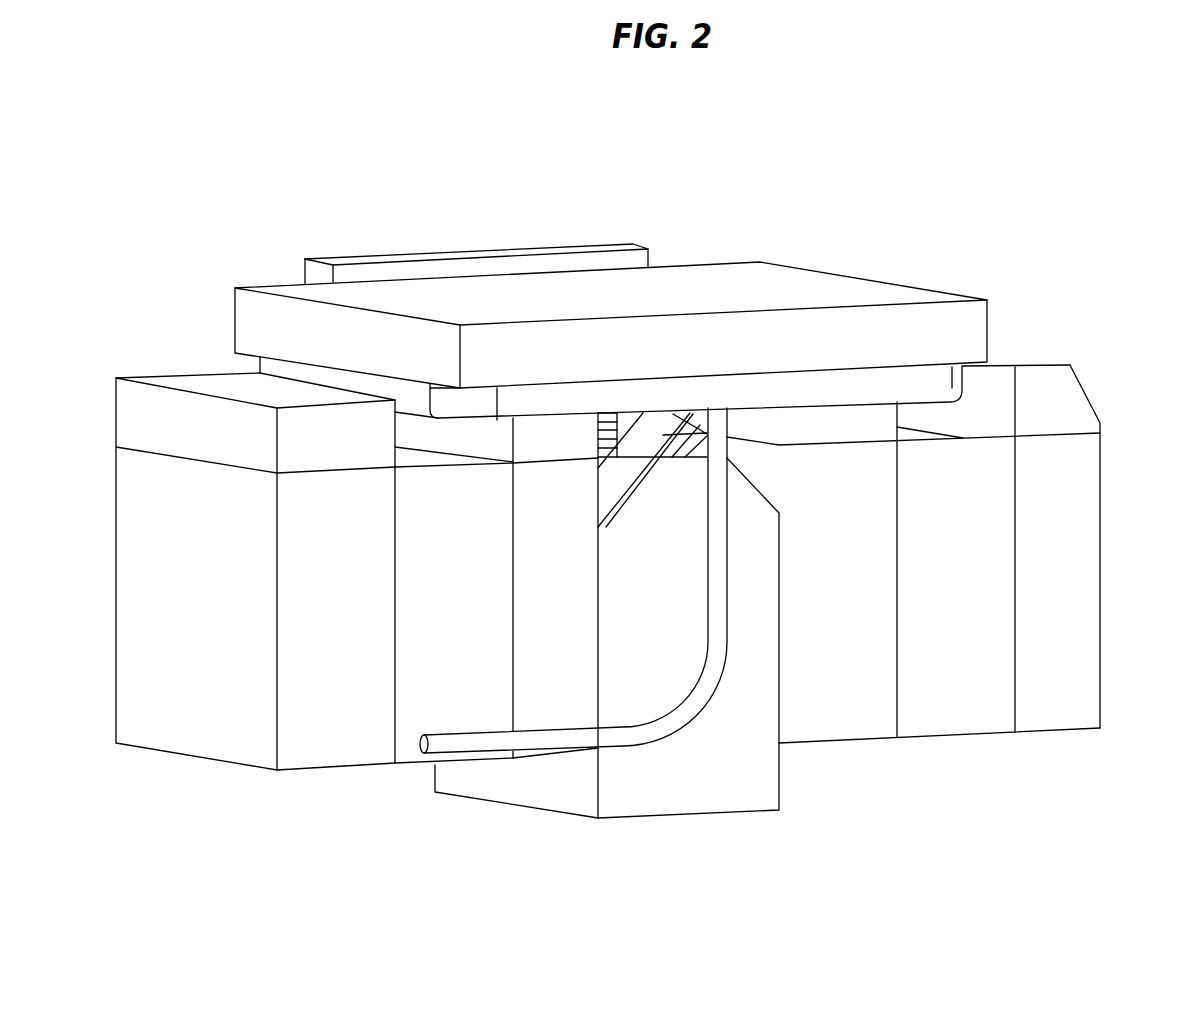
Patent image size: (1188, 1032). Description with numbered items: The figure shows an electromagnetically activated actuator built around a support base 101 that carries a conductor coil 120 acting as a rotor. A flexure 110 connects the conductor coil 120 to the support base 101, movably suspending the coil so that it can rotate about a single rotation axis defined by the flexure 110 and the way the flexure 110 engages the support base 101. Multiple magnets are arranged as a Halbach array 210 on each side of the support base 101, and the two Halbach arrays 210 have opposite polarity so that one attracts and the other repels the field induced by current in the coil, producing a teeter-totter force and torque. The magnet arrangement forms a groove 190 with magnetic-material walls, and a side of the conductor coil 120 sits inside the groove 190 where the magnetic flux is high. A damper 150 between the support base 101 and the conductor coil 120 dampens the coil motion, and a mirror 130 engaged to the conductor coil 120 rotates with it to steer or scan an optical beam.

The support base 101 is at (680, 802).
The flexure 110 is at (658, 456).
The conductor coil 120 is at (939, 383).
The mirror 130 is at (760, 261).
The damper 150 is at (472, 273).
The groove 190 is at (437, 441).
The Halbach array 210 is at (320, 770).